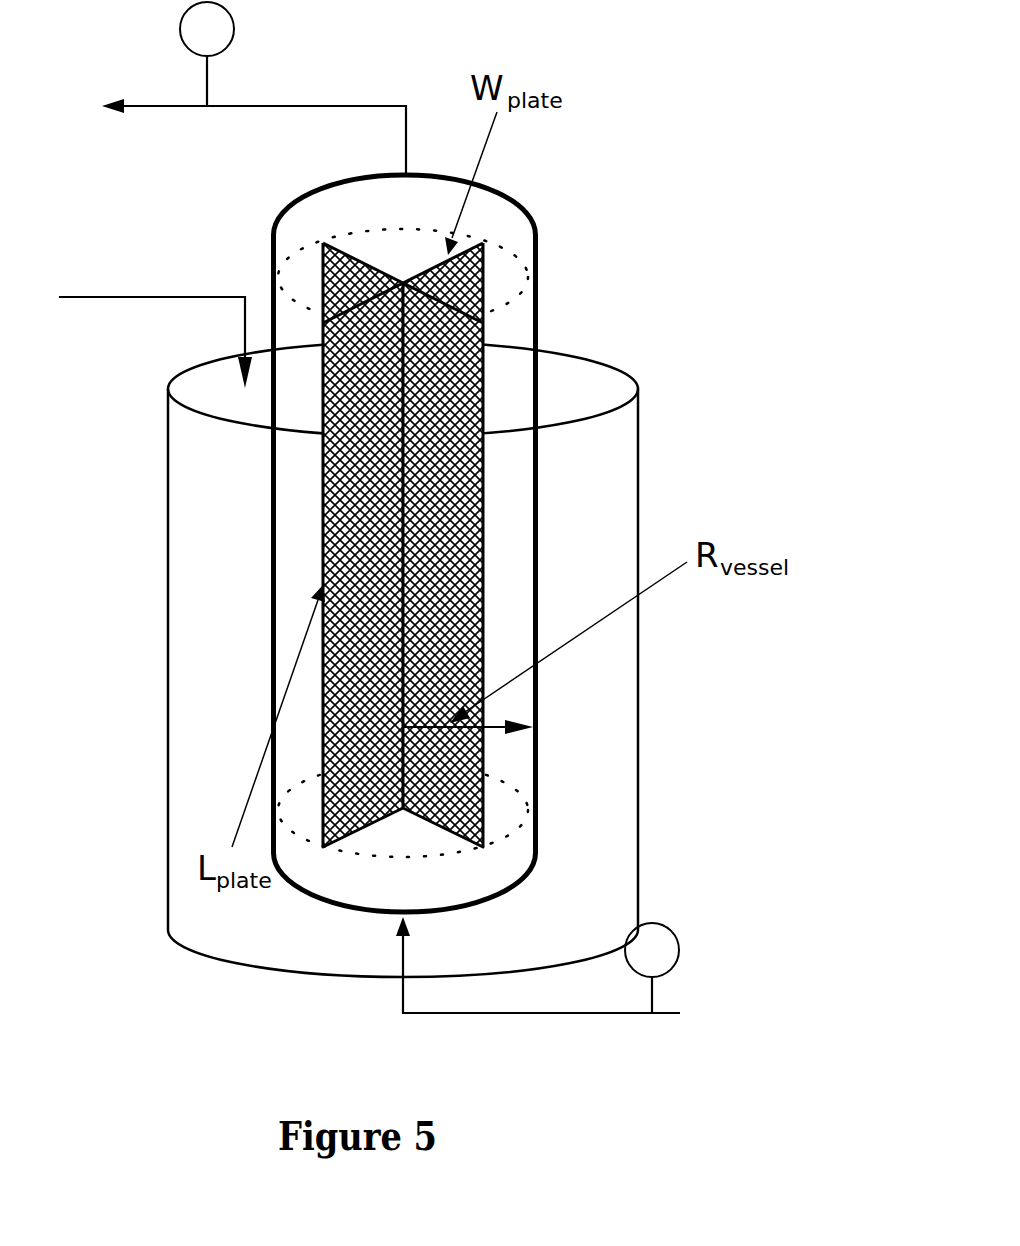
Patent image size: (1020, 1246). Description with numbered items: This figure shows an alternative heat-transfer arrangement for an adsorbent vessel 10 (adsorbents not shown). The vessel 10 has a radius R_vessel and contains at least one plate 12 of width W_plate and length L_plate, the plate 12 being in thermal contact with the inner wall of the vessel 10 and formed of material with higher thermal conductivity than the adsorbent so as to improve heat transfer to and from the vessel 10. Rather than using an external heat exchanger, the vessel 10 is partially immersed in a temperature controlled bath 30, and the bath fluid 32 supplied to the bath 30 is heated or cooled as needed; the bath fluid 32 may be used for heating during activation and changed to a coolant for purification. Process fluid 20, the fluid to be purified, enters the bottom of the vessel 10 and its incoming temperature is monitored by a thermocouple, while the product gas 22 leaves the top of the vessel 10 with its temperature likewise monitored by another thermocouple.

The vessel 10 is at (268, 202).
The plate 12 is at (350, 846).
The process fluid 20 is at (619, 968).
The product gas 22 is at (231, 87).
The temperature controlled bath 30 is at (152, 607).
The bath fluid 32 is at (155, 342).